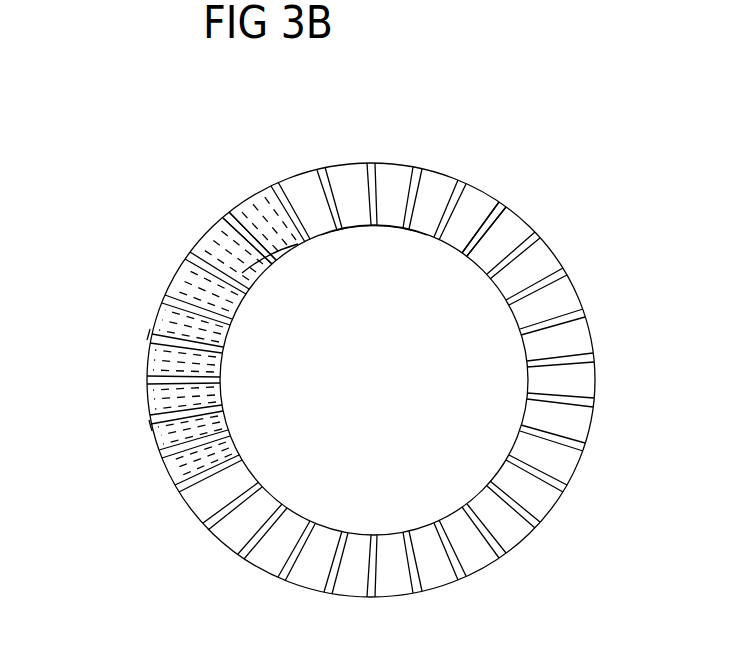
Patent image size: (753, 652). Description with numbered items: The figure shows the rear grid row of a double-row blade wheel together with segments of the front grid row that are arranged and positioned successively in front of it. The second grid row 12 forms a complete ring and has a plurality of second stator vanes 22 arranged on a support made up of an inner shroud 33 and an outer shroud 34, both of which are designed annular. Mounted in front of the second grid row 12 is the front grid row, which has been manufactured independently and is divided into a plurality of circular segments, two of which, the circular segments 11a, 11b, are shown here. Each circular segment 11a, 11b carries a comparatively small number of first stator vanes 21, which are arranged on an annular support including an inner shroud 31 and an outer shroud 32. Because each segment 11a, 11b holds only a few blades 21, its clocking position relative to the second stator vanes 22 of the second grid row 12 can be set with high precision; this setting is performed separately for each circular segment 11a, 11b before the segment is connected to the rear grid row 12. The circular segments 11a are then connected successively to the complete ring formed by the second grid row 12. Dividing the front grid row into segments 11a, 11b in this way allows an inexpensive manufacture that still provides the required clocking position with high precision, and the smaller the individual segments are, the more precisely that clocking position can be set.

The second grid row 12 is at (590, 246).
The circular segment 11a is at (130, 312).
The circular segment 11b is at (124, 428).
The first stator vane 21 is at (202, 231).
The second stator vane 22 is at (251, 194).
The inner shroud 31 is at (262, 286).
The outer shroud 32 is at (227, 203).
The inner shroud 33 is at (421, 236).
The outer shroud 34 is at (479, 190).